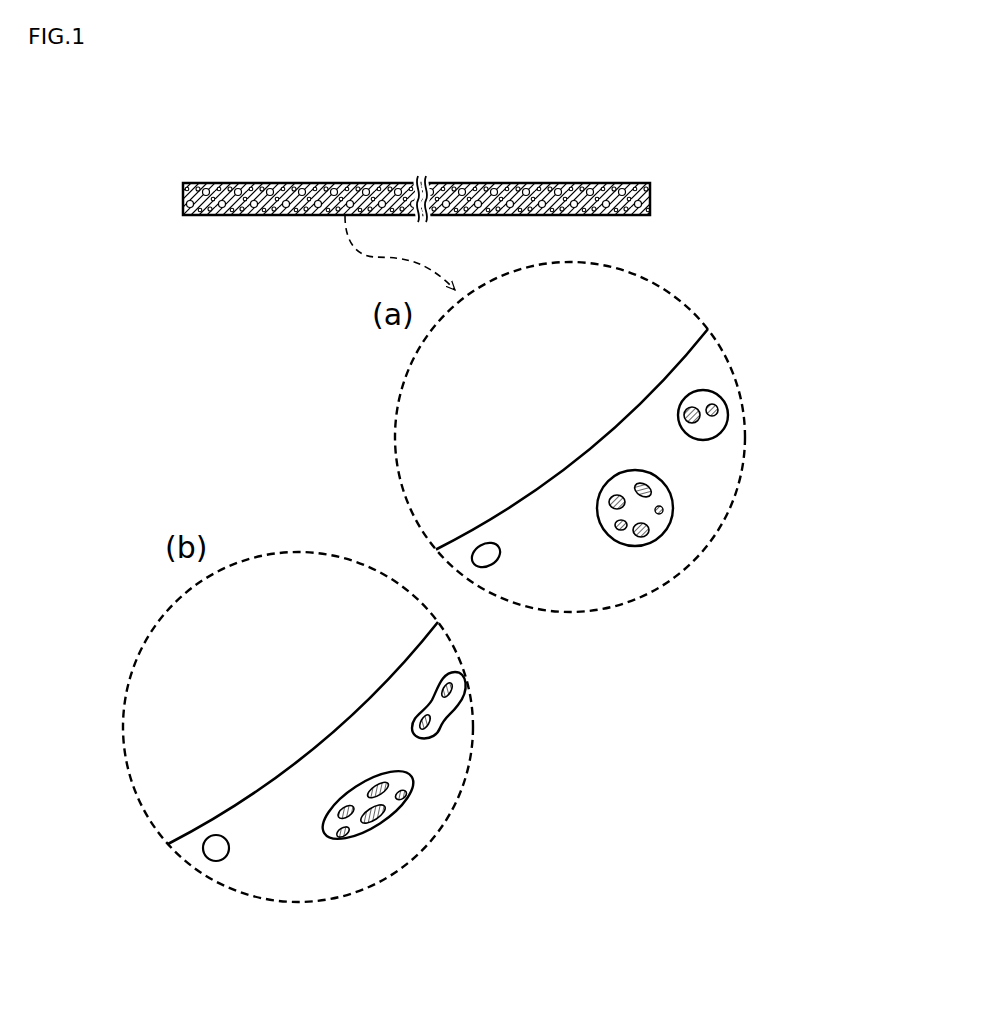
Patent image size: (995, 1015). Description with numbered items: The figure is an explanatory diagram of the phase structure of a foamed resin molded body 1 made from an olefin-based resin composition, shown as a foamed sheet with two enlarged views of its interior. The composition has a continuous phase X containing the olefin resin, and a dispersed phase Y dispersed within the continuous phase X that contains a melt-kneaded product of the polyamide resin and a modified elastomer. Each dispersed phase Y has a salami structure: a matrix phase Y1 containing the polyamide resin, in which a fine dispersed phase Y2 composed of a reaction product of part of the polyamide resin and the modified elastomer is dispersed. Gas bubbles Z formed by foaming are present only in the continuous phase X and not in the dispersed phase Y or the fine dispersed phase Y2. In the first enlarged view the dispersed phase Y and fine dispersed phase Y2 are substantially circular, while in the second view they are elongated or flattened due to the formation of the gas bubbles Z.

The foamed resin molded body 1 is at (608, 180).
The gas bubbles Z is at (223, 216).
The continuous phase X is at (719, 352).
The dispersed phase Y is at (742, 413).
The matrix phase Y1 is at (708, 400).
The fine dispersed phase Y2 is at (720, 423).